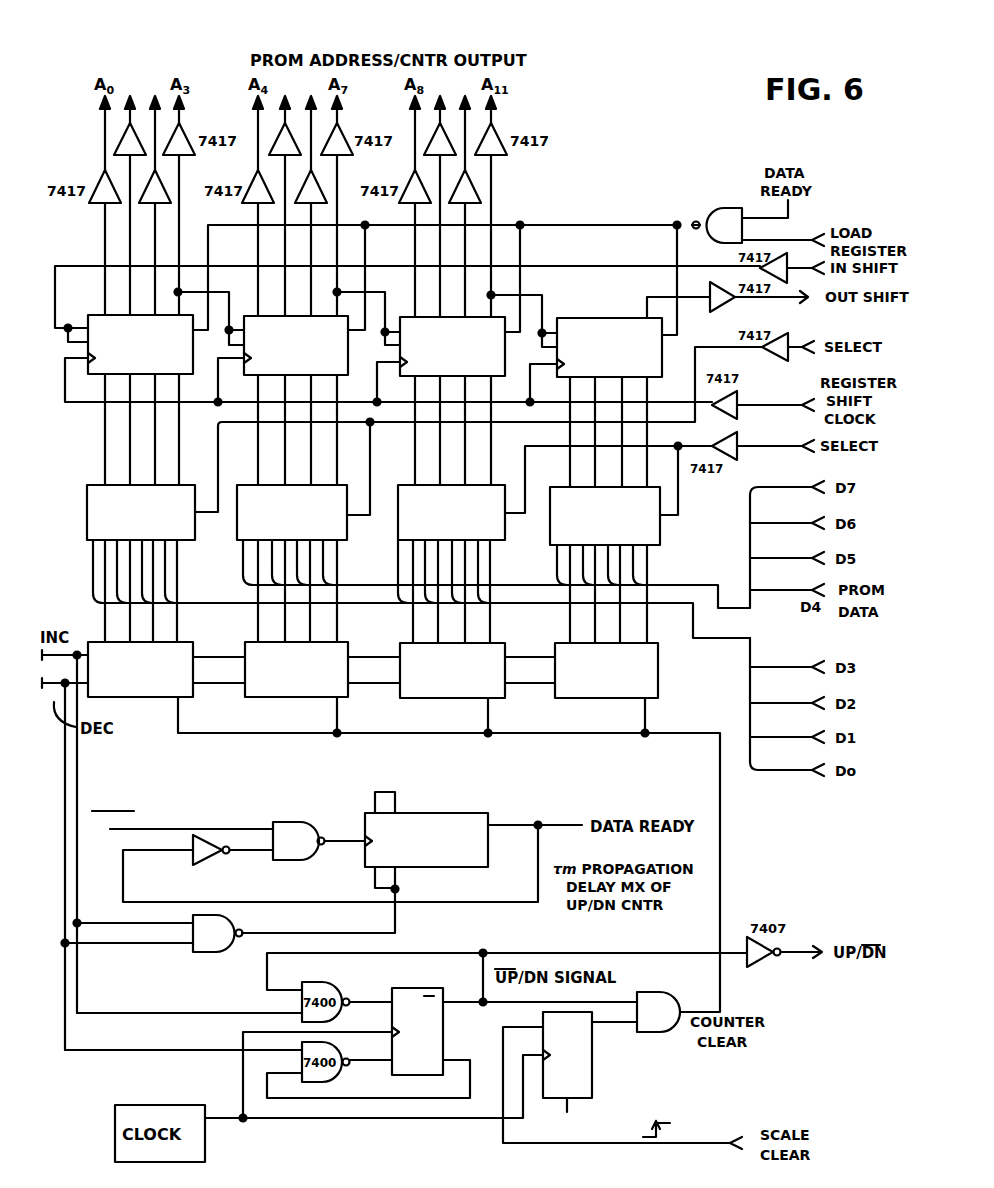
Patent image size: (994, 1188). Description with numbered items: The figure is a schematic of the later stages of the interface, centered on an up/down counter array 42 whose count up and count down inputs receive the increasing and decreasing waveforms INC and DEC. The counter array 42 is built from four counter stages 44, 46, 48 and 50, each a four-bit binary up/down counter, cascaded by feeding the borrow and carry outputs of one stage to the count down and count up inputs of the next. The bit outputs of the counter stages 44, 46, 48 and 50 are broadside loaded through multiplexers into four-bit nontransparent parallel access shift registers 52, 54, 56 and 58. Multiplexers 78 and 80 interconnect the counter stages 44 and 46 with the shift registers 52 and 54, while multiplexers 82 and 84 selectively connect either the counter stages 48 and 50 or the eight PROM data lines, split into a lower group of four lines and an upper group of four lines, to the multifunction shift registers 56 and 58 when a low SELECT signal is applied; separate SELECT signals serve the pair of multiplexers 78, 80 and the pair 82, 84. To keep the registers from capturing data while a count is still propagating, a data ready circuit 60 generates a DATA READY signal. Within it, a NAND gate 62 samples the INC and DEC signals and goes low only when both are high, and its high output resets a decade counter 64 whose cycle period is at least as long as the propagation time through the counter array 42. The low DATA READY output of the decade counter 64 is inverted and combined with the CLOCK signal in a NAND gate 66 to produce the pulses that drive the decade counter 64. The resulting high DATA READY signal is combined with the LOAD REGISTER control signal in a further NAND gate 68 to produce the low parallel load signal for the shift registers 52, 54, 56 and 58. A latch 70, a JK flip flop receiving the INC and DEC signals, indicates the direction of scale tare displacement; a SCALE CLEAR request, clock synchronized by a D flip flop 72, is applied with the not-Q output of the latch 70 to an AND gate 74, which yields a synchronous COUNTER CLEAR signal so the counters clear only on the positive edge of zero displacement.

The up/down counter array 42 is at (373, 670).
The counter stage 44 is at (130, 697).
The counter stage 46 is at (298, 697).
The counter stage 48 is at (455, 698).
The counter stage 50 is at (605, 698).
The shift register 52 is at (93, 315).
The shift register 54 is at (252, 316).
The shift register 56 is at (408, 317).
The shift register 58 is at (580, 318).
The data ready circuit 60 is at (317, 850).
The NAND gate 62 is at (205, 952).
The decade counter 64 is at (463, 813).
The NAND gate 66 is at (290, 822).
The NAND gate 68 is at (714, 208).
The latch 70 is at (412, 988).
The D flip flop 72 is at (592, 1075).
The AND gate 74 is at (658, 1026).
The multiplexer 78 is at (92, 485).
The multiplexer 80 is at (245, 485).
The multiplexer 82 is at (402, 485).
The multiplexer 84 is at (560, 487).